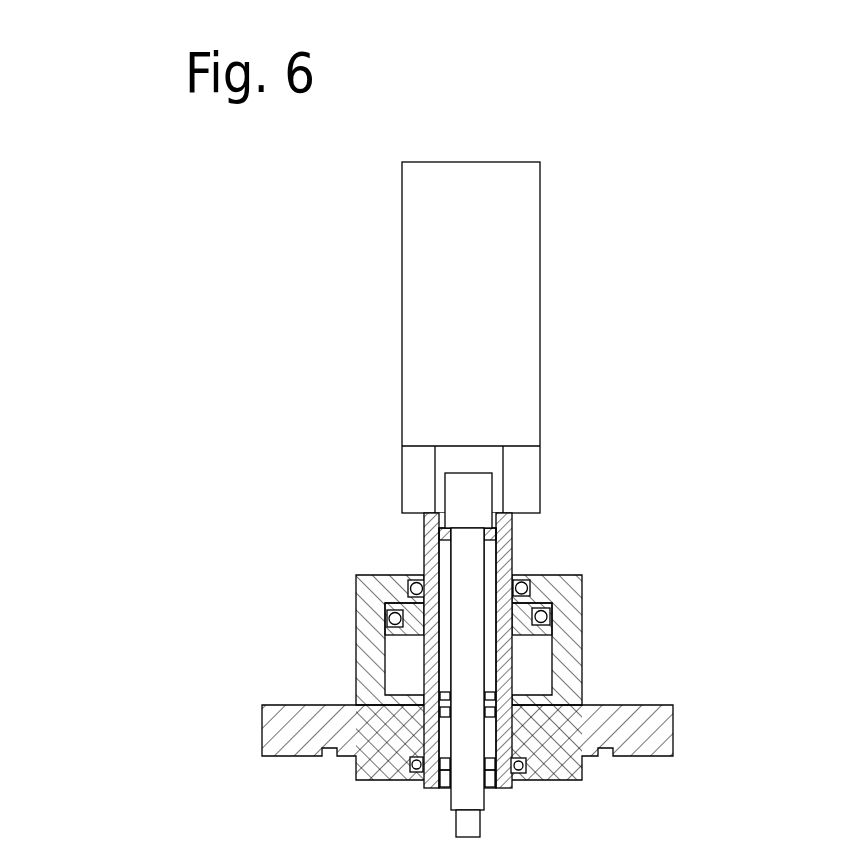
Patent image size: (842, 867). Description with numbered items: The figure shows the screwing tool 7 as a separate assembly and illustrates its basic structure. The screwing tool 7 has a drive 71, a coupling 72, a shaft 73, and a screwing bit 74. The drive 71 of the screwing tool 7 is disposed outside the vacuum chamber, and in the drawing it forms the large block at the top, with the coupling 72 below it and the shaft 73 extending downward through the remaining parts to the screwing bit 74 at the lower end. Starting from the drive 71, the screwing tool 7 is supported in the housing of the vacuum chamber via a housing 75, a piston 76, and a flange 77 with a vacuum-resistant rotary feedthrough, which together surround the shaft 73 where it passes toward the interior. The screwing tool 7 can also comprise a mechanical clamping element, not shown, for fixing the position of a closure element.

The screwing tool 7 is at (558, 248).
The drive 71 is at (466, 385).
The coupling 72 is at (453, 478).
The shaft 73 is at (453, 547).
The screwing bit 74 is at (453, 818).
The housing 75 is at (550, 570).
The piston 76 is at (512, 620).
The flange 77 is at (568, 723).